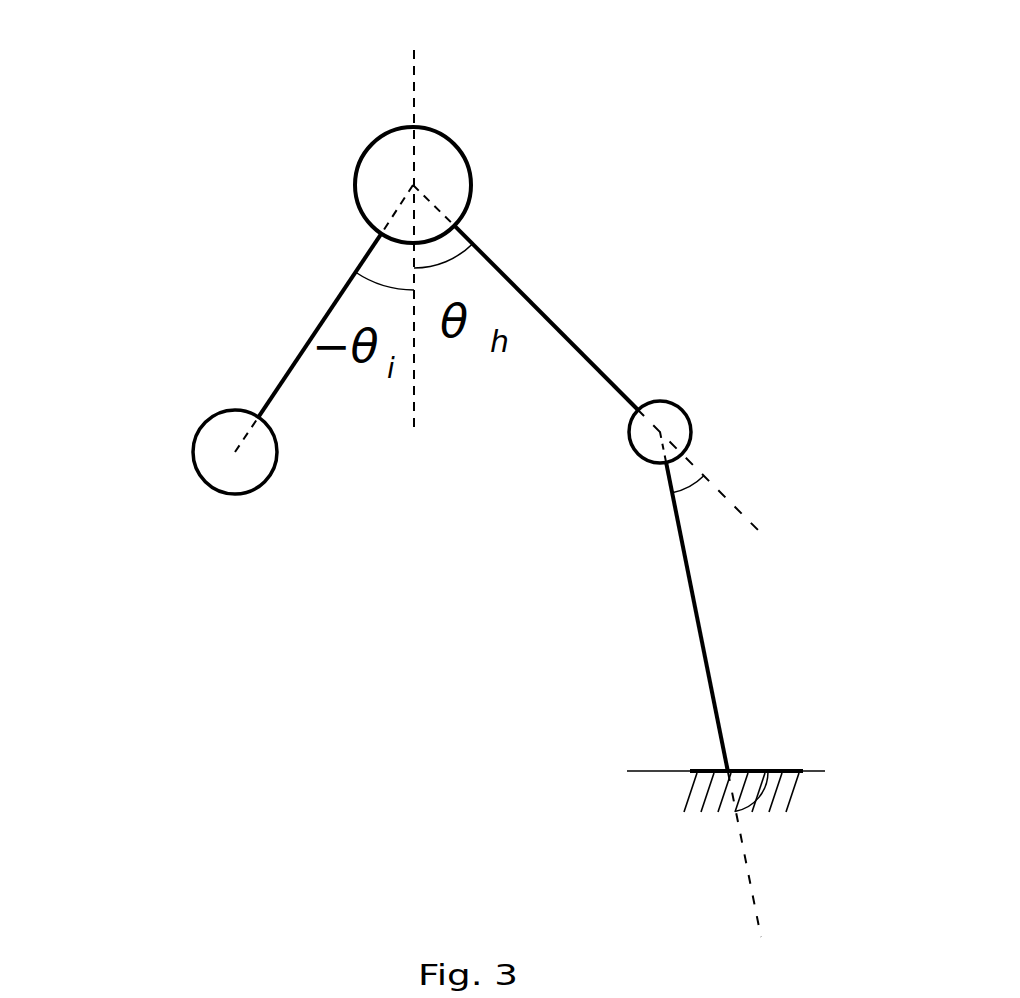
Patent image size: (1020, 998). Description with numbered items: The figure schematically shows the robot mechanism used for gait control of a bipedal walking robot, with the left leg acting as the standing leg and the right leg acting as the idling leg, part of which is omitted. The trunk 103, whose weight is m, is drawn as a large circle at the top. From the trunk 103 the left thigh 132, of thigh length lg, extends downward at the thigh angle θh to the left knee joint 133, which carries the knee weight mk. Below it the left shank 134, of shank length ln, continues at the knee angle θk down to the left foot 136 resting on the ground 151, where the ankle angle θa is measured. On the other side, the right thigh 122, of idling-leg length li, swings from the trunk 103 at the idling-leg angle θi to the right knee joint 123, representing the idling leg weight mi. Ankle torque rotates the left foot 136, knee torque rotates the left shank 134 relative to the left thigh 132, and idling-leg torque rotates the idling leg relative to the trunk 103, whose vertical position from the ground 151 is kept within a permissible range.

The trunk 103 is at (450, 137).
The right thigh 122 is at (327, 310).
The right knee joint 123 is at (195, 453).
The left thigh 132 is at (553, 323).
The left knee joint 133 is at (688, 418).
The left shank 134 is at (698, 617).
The left foot 136 is at (790, 770).
The ground 151 is at (628, 792).